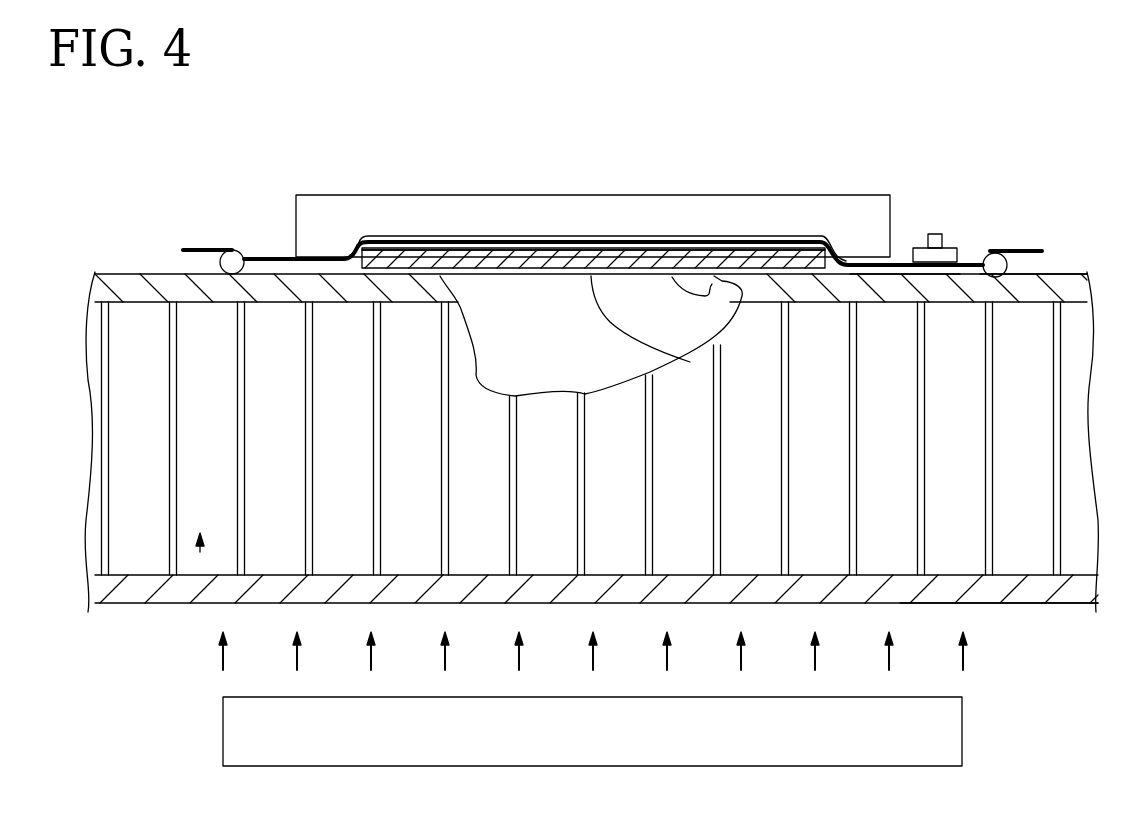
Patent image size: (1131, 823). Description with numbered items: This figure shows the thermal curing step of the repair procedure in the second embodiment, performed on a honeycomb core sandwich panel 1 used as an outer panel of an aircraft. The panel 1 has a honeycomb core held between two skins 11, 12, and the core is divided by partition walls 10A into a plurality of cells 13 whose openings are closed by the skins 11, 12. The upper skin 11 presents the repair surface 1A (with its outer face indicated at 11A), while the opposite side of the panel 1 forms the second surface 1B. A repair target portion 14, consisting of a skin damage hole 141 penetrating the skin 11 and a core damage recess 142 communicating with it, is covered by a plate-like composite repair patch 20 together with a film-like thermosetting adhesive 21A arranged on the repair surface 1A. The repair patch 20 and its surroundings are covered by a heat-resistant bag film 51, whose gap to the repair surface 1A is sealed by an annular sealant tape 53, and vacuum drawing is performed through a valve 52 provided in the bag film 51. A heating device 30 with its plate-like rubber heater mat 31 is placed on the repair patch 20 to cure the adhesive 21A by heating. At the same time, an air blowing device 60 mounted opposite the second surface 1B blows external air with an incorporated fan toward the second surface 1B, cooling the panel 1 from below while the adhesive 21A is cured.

The honeycomb core sandwich panel 1 is at (1067, 264).
The repair surface 1A is at (894, 272).
The second surface 1B is at (1032, 604).
The partition wall 10A is at (112, 532).
The skin 11 is at (1095, 272).
The upper surface of upper plate 11A is at (1052, 273).
The skin 12 is at (1075, 605).
The cell 13 is at (197, 556).
The repair target portion 14 is at (593, 188).
The skin damage hole 141 is at (670, 250).
The core damage recess 142 is at (698, 142).
The repair patch 20 is at (394, 240).
The thermosetting adhesive 21A is at (456, 246).
The heating device 30 is at (593, 171).
The heater mat 31 is at (366, 172).
The bag film 51 is at (280, 257).
The valve 52 is at (945, 248).
The sealant tape 53 is at (229, 250).
The air blowing device 60 is at (904, 768).